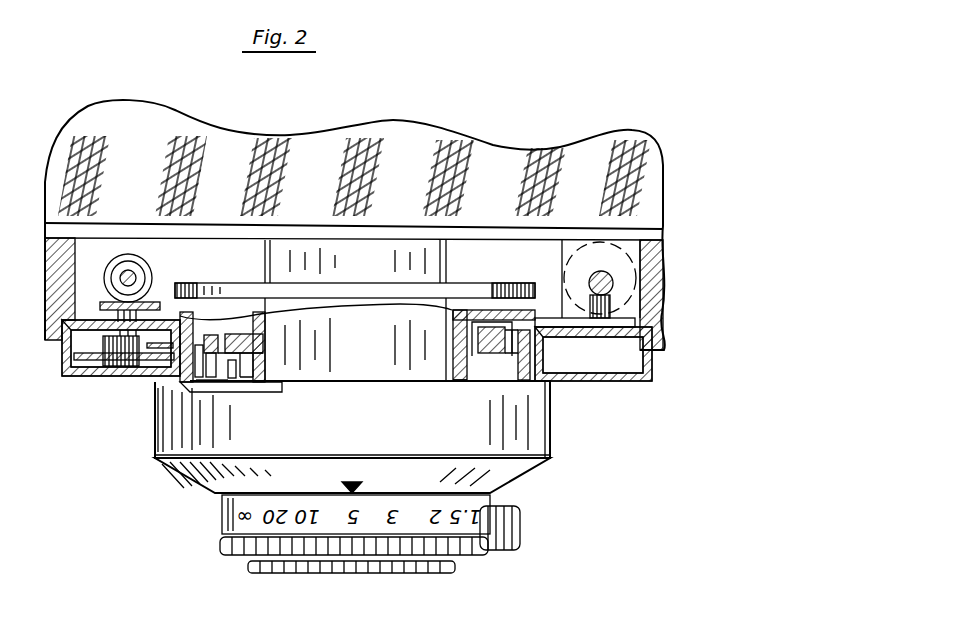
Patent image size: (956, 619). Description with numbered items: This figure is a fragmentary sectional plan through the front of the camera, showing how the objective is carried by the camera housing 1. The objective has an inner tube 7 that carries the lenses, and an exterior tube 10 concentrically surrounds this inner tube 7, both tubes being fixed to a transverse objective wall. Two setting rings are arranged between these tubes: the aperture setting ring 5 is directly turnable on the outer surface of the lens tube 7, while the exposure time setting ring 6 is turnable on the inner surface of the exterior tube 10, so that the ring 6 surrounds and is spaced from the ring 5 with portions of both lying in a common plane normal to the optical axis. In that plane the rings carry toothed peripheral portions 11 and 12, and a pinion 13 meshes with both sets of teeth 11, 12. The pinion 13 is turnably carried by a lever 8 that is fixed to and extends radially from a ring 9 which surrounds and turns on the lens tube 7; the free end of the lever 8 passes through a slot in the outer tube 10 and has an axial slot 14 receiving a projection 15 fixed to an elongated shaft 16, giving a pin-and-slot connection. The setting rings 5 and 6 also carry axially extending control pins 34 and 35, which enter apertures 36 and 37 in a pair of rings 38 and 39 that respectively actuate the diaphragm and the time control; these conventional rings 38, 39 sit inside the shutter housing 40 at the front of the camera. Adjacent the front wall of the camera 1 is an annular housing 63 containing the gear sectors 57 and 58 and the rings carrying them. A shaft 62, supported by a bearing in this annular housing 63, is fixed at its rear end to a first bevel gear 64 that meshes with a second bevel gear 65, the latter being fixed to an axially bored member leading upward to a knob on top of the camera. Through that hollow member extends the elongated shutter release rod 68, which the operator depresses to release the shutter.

The camera housing 1 is at (652, 262).
The aperture setting ring 5 is at (250, 334).
The exposure time setting ring 6 is at (211, 335).
The inner tube 7 is at (380, 316).
The lever 8 is at (490, 312).
The ring 9 is at (459, 312).
The exterior tube 10 is at (198, 290).
The toothed peripheral portion 11 is at (470, 345).
The toothed peripheral portion 12 is at (512, 356).
The pinion 13 is at (490, 354).
The axial slot 14 is at (570, 328).
The projection 15 is at (599, 312).
The elongated shaft 16 is at (590, 278).
The control pin 34 is at (262, 358).
The control pin 35 is at (230, 360).
The aperture 36 is at (244, 384).
The aperture 37 is at (216, 392).
The ring 38 is at (275, 386).
The ring 39 is at (225, 352).
The shutter housing 40 is at (545, 450).
The gear sector 57 is at (82, 362).
The gear sector 58 is at (125, 366).
The shaft 62 is at (78, 332).
The annular housing 63 is at (68, 376).
The first bevel gear 64 is at (108, 302).
The second bevel gear 65 is at (126, 262).
The shutter release rod 68 is at (136, 276).